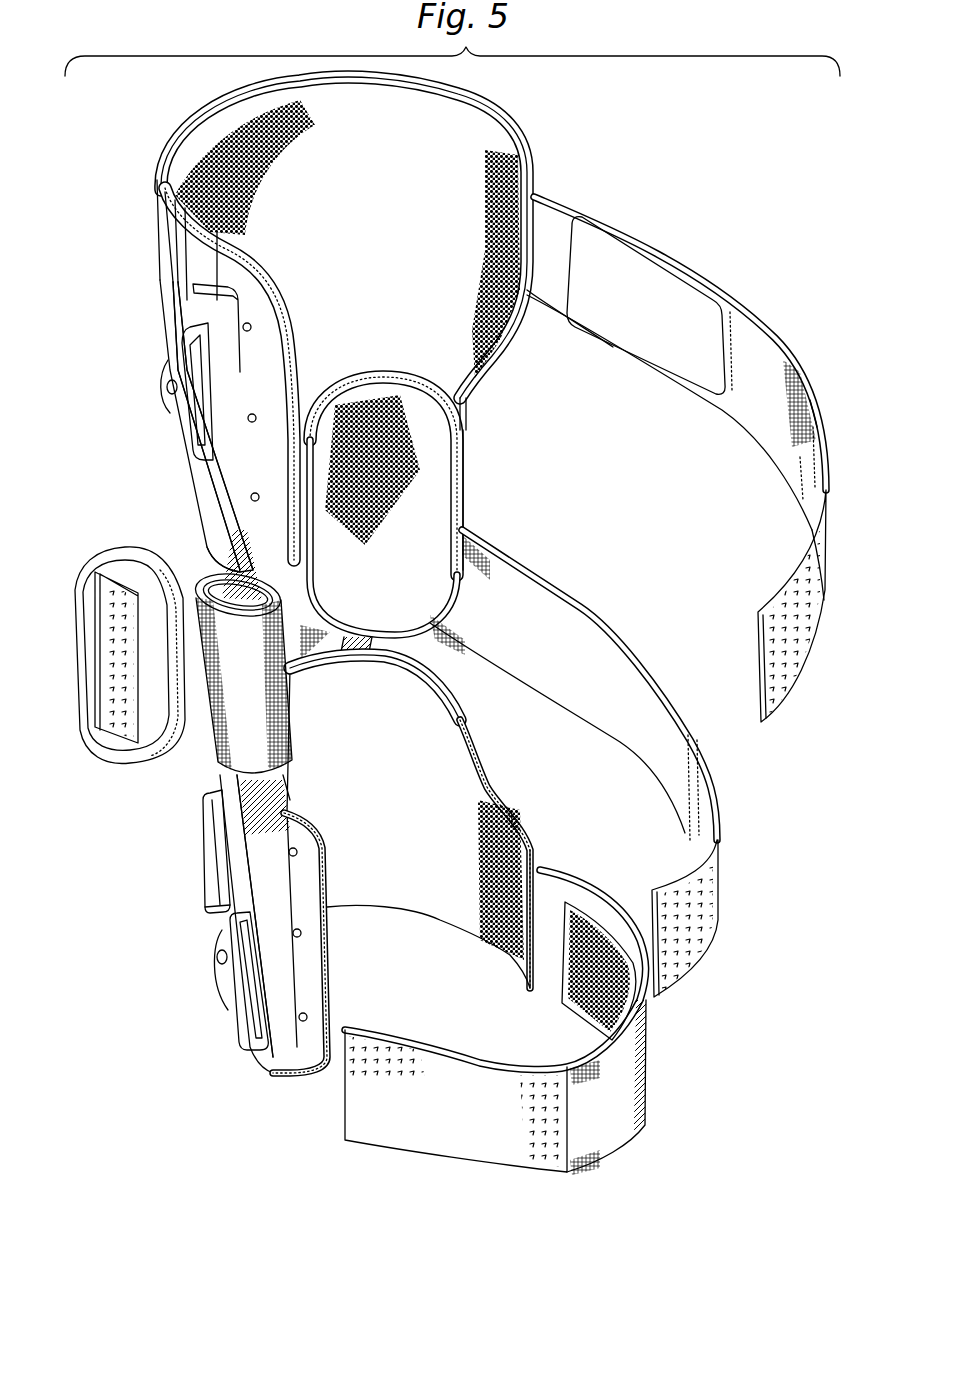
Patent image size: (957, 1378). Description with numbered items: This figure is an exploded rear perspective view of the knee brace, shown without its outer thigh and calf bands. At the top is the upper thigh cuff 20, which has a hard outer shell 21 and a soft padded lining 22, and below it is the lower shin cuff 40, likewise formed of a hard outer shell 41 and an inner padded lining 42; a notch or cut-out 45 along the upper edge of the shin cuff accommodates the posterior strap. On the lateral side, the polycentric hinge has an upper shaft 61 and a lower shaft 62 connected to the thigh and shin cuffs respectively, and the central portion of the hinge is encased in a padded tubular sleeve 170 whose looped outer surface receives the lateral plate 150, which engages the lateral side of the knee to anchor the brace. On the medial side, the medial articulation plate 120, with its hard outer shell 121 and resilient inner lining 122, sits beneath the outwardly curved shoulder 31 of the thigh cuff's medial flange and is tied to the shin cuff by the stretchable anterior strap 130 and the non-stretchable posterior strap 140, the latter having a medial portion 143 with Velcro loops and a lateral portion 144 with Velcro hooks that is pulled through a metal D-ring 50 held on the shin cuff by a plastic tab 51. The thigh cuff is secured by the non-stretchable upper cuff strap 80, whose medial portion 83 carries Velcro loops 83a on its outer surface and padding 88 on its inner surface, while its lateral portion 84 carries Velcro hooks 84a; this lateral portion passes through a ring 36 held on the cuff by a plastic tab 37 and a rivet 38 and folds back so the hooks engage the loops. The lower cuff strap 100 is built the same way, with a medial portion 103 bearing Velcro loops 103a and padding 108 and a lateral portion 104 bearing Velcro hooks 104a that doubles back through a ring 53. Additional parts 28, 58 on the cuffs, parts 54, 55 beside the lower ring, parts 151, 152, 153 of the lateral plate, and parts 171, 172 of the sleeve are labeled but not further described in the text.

The upper thigh cuff 20 is at (157, 272).
The hard outer shell 21 is at (517, 131).
The soft padded lining 22 is at (477, 137).
The rivets 28 is at (257, 493).
The outwardly curved shoulder 31 is at (468, 402).
The ring 36 is at (193, 332).
The plastic tab 37 is at (175, 362).
The rivet 38 is at (170, 387).
The lower shin cuff 40 is at (273, 1075).
The hard outer shell 41 is at (477, 757).
The inner padded lining 42 is at (450, 735).
The notch or cut-out 45 is at (493, 783).
The metal D-ring 50 is at (207, 907).
The plastic tab 51 is at (203, 847).
The ring 53 is at (247, 1047).
The second lower buckle loop 54 is at (223, 987).
The second lower buckle fastener 55 is at (217, 957).
The rivets 58 is at (306, 1013).
The upper shaft 61 is at (213, 510).
The lower shaft 62 is at (250, 805).
The upper cuff strap 80 is at (690, 459).
The medial portion 83 is at (765, 322).
The Velcro loops 83a is at (788, 357).
The lateral portion 84 is at (803, 590).
The Velcro hooks 84a is at (803, 640).
The padding 88 is at (647, 260).
The lower cuff strap 100 is at (517, 1022).
The medial portion 103 is at (640, 1070).
The Velcro loops 103a is at (640, 1102).
The lateral portion 104 is at (387, 1133).
The Velcro hooks 104a is at (397, 1050).
The padding 108 is at (587, 997).
The medial articulation plate 120 is at (468, 503).
The hard outer shell 121 is at (467, 448).
The inner lining 122 is at (453, 470).
The stretchable anterior strap 130 is at (372, 647).
The non-stretchable posterior strap 140 is at (609, 763).
The medial portion 143 is at (608, 632).
The lateral portion 144 is at (720, 863).
The lateral plate 150 is at (128, 657).
The hinge pad rim 151 is at (138, 548).
The hinge pad body 152 is at (103, 548).
The hinge pad fastener patch 153 is at (123, 717).
The padded tubular sleeve 170 is at (207, 738).
The hinge cover ring 171 is at (273, 613).
The hinge cover opening 172 is at (260, 607).